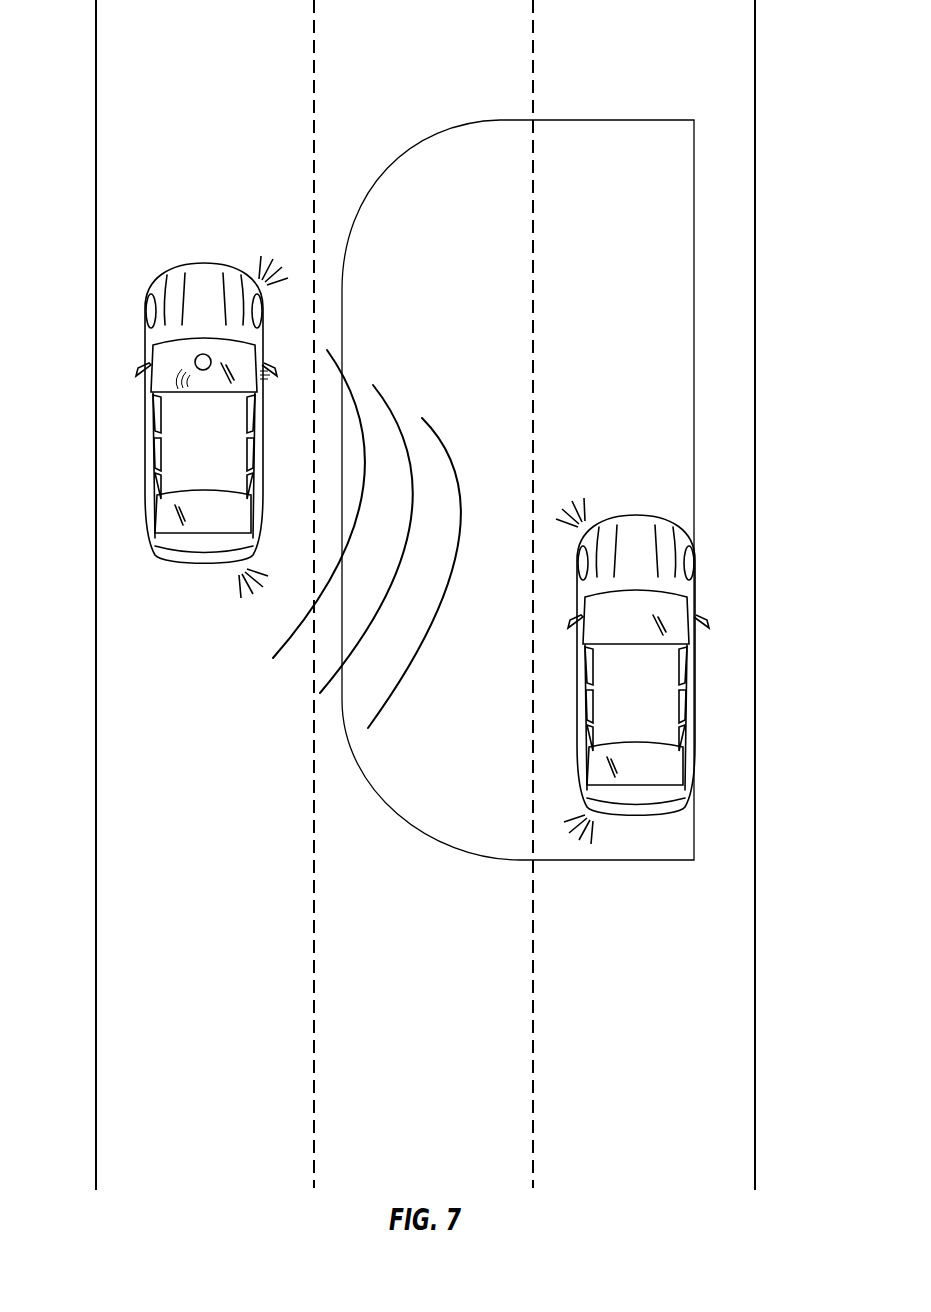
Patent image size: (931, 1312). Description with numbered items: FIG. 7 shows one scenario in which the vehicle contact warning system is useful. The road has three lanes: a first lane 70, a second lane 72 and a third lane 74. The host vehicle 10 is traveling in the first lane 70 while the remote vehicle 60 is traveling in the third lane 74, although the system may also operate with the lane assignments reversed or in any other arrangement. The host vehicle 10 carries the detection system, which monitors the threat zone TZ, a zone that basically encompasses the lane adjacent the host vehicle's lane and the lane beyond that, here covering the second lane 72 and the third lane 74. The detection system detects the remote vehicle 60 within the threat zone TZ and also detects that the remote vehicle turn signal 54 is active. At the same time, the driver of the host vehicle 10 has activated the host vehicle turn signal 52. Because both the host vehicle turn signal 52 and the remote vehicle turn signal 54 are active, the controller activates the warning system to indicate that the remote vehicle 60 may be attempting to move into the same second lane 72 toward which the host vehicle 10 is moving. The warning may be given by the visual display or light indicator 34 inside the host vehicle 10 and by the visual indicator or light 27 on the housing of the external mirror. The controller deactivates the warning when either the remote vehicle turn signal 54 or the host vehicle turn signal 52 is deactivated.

The host vehicle 10 is at (200, 232).
The visual indicator or light 27 is at (262, 378).
The visual display or light indicator 34 is at (196, 360).
The host vehicle turn signal 52 is at (230, 263).
The remote vehicle turn signal 54 is at (590, 527).
The remote vehicle 60 is at (711, 664).
The first lane 70 is at (191, 45).
The second lane 72 is at (411, 45).
The third lane 74 is at (631, 45).
The threat zone TZ is at (638, 220).